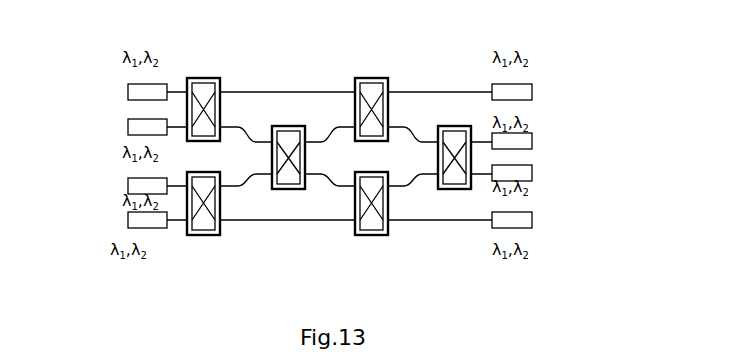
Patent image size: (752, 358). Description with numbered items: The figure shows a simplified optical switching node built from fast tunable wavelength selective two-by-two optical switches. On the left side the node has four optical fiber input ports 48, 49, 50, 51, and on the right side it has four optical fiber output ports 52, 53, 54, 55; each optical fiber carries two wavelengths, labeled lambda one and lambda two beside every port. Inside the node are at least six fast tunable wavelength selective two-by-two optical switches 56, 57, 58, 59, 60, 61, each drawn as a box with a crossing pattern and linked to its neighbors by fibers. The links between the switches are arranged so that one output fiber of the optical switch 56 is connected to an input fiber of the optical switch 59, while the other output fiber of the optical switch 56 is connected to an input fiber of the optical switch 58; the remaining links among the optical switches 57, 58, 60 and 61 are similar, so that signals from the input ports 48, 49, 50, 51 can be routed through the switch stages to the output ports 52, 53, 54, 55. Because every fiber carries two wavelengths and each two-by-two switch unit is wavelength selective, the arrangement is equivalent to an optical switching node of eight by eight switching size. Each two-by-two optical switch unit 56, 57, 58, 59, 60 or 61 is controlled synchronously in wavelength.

The optical fiber input port 48 is at (128, 90).
The optical fiber input port 49 is at (128, 128).
The optical fiber input port 50 is at (128, 183).
The optical fiber input port 51 is at (128, 220).
The optical fiber output port 52 is at (532, 85).
The optical fiber output port 53 is at (532, 134).
The optical fiber output port 54 is at (532, 166).
The optical fiber output port 55 is at (532, 213).
The fast tunable wavelength selective 2×2 optical switch 56 is at (202, 88).
The fast tunable wavelength selective 2×2 optical switch 57 is at (200, 222).
The fast tunable wavelength selective 2×2 optical switch 58 is at (287, 135).
The fast tunable wavelength selective 2×2 optical switch 59 is at (377, 88).
The fast tunable wavelength selective 2×2 optical switch 60 is at (373, 217).
The fast tunable wavelength selective 2×2 optical switch 61 is at (455, 178).